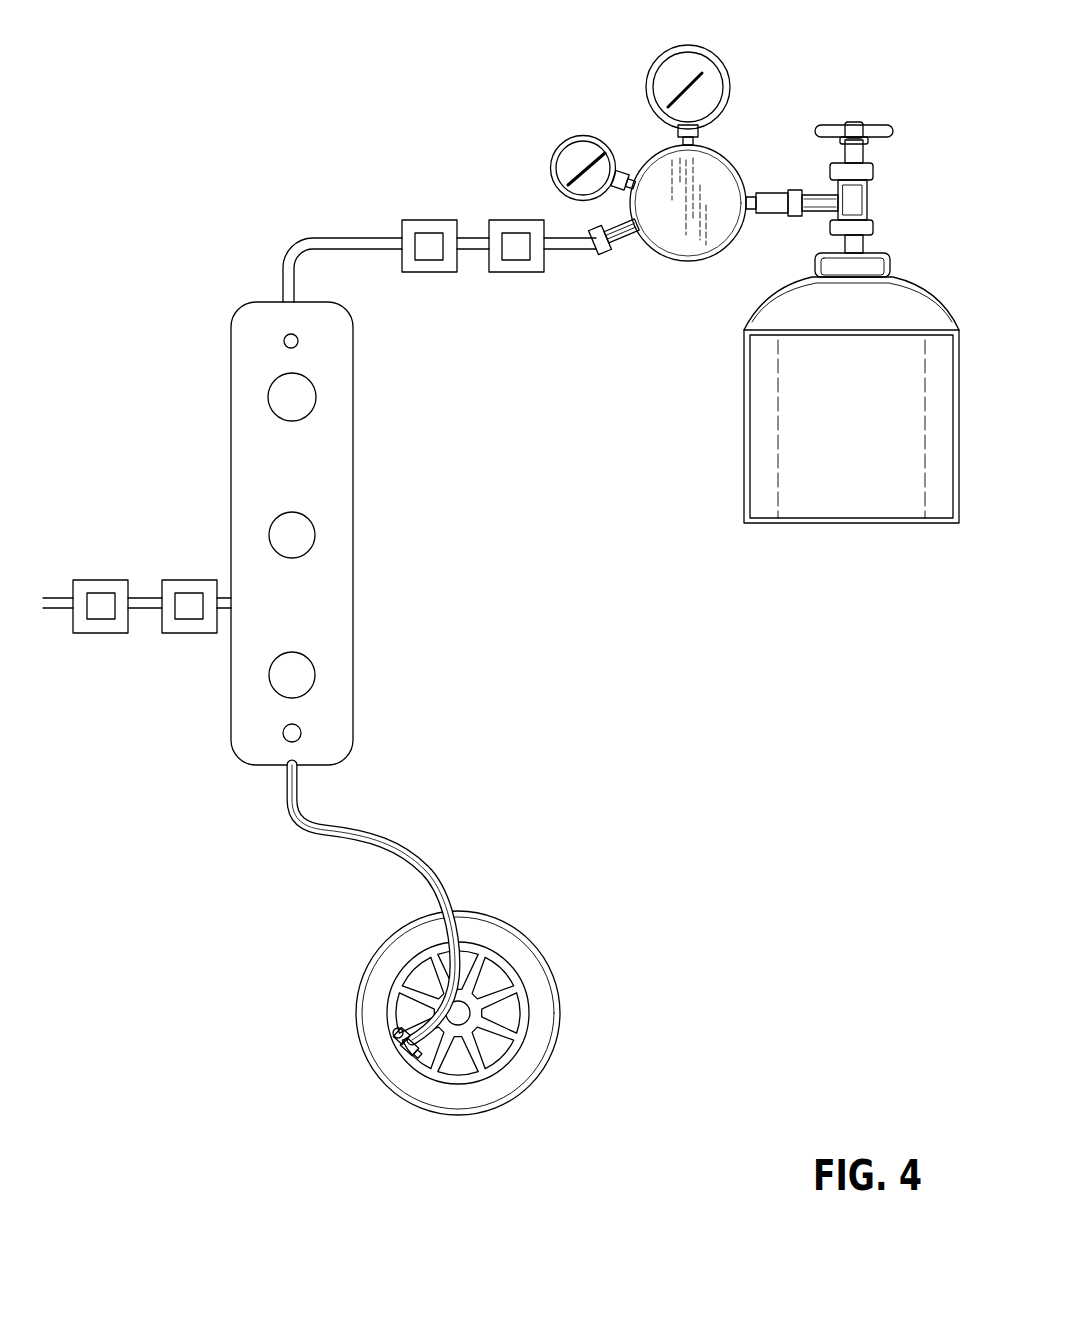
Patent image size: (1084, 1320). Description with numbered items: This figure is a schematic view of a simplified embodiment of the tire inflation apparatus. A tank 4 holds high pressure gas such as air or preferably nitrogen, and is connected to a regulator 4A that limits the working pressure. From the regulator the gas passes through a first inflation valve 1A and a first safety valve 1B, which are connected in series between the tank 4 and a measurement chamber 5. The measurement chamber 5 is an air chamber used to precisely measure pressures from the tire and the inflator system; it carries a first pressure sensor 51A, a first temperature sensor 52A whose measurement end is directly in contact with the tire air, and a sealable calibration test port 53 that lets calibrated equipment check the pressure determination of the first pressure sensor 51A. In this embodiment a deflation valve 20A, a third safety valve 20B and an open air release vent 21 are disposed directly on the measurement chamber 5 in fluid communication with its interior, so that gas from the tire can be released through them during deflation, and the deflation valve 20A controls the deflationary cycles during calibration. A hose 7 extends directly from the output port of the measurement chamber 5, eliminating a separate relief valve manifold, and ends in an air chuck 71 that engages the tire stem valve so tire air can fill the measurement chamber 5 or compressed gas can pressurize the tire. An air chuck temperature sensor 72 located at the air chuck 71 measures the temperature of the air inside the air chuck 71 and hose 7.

The first inflation valve 1A is at (518, 227).
The first safety valve 1B is at (430, 227).
The tank 4 is at (818, 380).
The regulator 4A is at (683, 210).
The measurement chamber 5 is at (250, 322).
The first pressure sensor 51A is at (297, 400).
The first temperature sensor 52A is at (299, 341).
The calibration test port 53 is at (292, 535).
The deflation valve 20A is at (188, 612).
The third safety valve 20B is at (100, 612).
The open air release vent 21 is at (62, 598).
The hose 7 is at (430, 870).
The air chuck 71 is at (412, 1058).
The air chuck temperature sensor 72 is at (397, 1033).